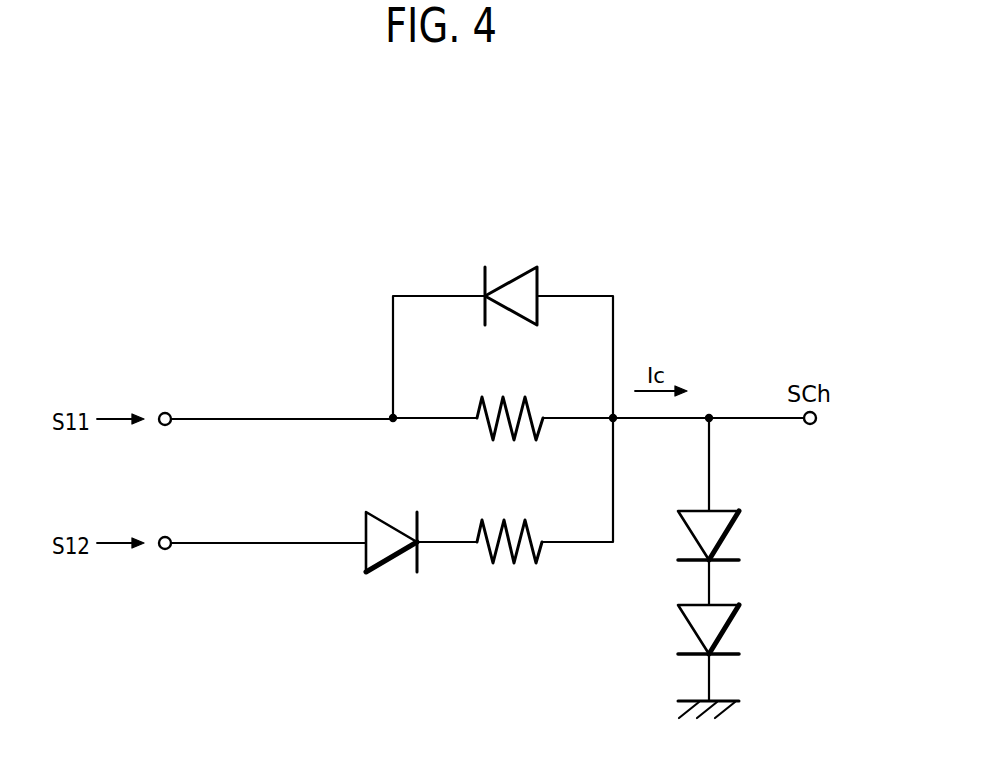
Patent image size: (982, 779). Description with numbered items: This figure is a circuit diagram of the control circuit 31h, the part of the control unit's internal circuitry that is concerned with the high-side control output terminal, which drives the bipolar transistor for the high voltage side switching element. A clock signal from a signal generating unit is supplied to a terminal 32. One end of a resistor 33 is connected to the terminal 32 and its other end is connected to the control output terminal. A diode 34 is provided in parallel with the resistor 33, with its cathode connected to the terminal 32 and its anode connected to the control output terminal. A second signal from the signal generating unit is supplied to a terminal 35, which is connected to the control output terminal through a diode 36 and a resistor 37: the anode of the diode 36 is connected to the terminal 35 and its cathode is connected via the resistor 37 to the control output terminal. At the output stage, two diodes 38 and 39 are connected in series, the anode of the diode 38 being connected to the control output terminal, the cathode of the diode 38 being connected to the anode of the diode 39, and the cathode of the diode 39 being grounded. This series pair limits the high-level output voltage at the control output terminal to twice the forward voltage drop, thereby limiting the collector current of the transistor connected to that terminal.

The control circuit 31h is at (308, 252).
The terminal 32 is at (165, 412).
The resistor 33 is at (503, 402).
The diode 34 is at (490, 285).
The terminal 35 is at (165, 536).
The diode 36 is at (389, 521).
The resistor 37 is at (504, 525).
The diode 38 is at (733, 530).
The diode 39 is at (733, 625).